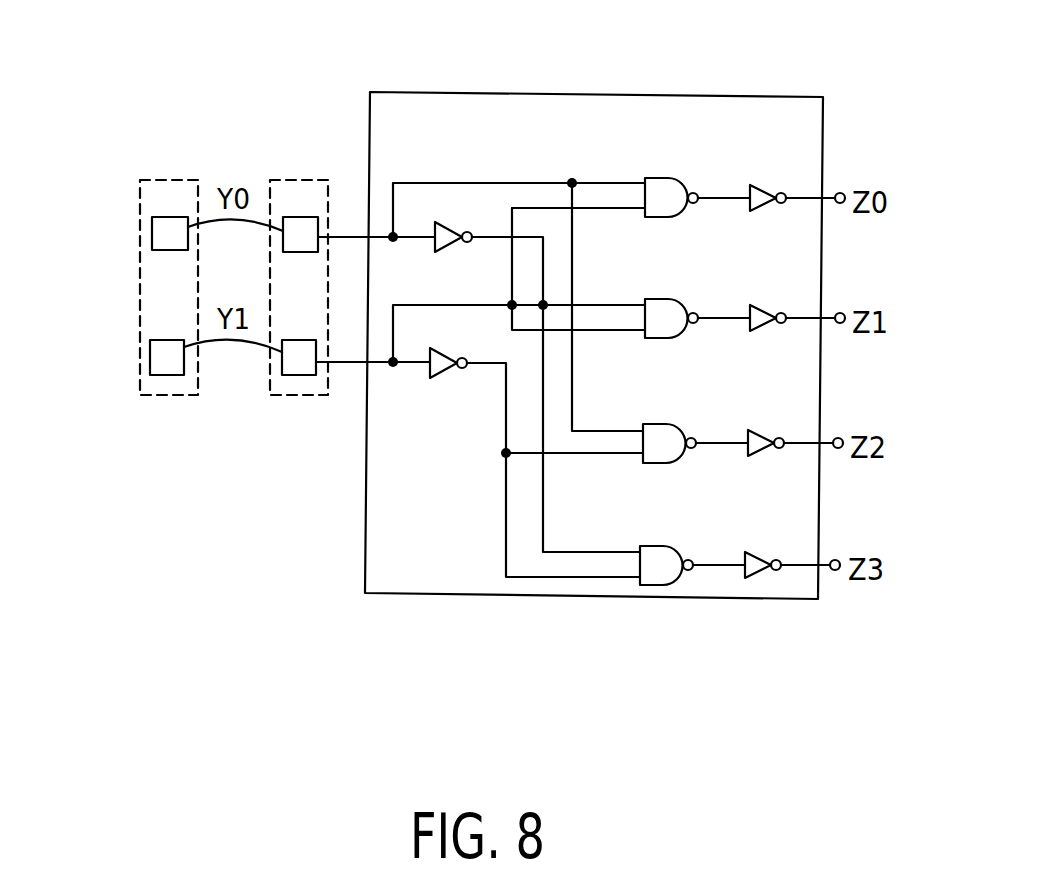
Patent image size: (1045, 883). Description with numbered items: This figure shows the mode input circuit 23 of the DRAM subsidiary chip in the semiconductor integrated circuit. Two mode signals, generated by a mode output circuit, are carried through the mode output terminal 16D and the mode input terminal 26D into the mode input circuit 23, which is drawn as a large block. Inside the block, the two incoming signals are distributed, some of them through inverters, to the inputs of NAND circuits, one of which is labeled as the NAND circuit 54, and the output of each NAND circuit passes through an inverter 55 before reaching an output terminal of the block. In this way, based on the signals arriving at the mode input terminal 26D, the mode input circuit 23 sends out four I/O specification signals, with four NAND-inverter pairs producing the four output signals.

The mode input circuit 23 is at (453, 92).
The NAND circuit 54 is at (660, 178).
The inverter 55 is at (752, 185).
The mode output terminal 16D is at (177, 397).
The mode input terminal 26D is at (293, 397).